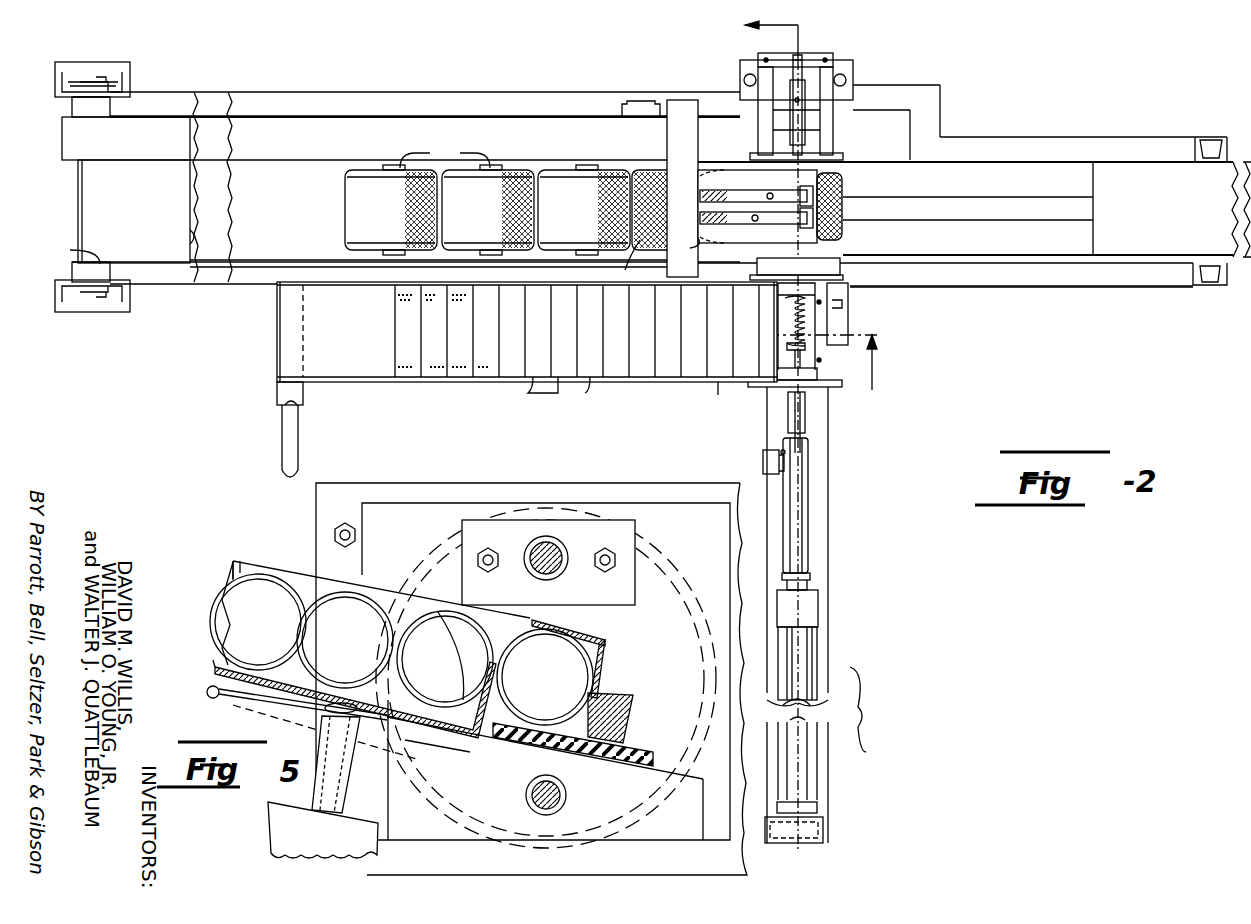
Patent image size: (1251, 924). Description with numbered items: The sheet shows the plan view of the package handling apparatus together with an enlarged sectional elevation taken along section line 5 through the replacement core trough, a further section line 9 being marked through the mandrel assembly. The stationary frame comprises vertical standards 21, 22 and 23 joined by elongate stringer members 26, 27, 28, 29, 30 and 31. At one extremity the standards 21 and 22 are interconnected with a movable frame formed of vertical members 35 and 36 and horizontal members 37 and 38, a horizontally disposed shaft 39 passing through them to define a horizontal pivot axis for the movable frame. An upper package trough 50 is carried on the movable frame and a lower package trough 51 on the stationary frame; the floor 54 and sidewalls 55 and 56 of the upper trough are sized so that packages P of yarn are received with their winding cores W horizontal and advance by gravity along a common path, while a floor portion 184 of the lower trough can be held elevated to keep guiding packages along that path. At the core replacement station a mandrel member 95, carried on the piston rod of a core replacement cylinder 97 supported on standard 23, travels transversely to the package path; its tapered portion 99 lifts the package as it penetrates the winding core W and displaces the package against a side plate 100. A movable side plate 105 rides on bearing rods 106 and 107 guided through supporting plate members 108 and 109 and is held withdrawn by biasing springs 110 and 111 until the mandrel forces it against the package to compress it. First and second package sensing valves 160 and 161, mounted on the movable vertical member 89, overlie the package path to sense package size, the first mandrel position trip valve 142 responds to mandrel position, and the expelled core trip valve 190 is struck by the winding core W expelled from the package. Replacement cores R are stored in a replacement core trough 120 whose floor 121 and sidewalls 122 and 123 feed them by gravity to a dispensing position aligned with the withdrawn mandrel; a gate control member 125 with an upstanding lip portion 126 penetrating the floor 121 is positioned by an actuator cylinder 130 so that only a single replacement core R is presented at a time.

In FIG. 2, the vertical standard 21 is at (110, 298).
In FIG. 2, the vertical standard 22 is at (110, 69).
In FIG. 2, the vertical standard 23 is at (820, 830).
In FIG. 2, the stringer member 26 is at (225, 295).
In FIG. 2, the stringer member 27 is at (225, 102).
In FIG. 2, the stringer member 28 is at (1205, 285).
In FIG. 2, the stringer member 29 is at (1210, 137).
In FIG. 2, the stringer member 30 is at (1040, 287).
In FIG. 2, the stringer member 31 is at (1025, 115).
In FIG. 2, the vertical member 35 is at (72, 272).
In FIG. 2, the vertical member 36 is at (72, 110).
In FIG. 2, the horizontal member 37 is at (205, 229).
In FIG. 2, the horizontal member 38 is at (211, 187).
In FIG. 2, the shaft 39 is at (82, 64).
In FIG. 2, the upper package trough 50 is at (85, 208).
In FIG. 2, the lower package trough 51 is at (1060, 162).
In FIG. 2, the floor 54 is at (115, 222).
In FIG. 2, the sidewall 55 is at (67, 247).
In FIG. 2, the sidewall 56 is at (100, 166).
In FIG. 2, the movable vertical member 89 is at (644, 237).
In FIG. 2, the mandrel member 95 is at (808, 508).
In FIG. 2, the core replacement cylinder 97 is at (798, 660).
In FIG. 2, the tapered portion 99 is at (805, 425).
In FIG. 2, the side plate 100 is at (745, 155).
In FIG. 2, the movable side plate 105 is at (830, 265).
In FIG. 5, the movable side plate 105 is at (655, 578).
In FIG. 5, the bearing rod 106 is at (560, 572).
In FIG. 5, the bearing rod 107 is at (566, 795).
In FIG. 2, the supporting plate member 108 is at (752, 388).
In FIG. 5, the supporting plate member 109 is at (400, 510).
In FIG. 5, the biasing spring 110 is at (525, 565).
In FIG. 5, the biasing spring 111 is at (525, 800).
In FIG. 2, the replacement core trough 120 is at (288, 352).
In FIG. 5, the replacement core trough 120 is at (256, 562).
In FIG. 2, the floor 121 is at (325, 339).
In FIG. 5, the floor 121 is at (215, 672).
In FIG. 2, the sidewall 122 is at (373, 375).
In FIG. 2, the sidewall 123 is at (376, 285).
In FIG. 5, the sidewall 123 is at (235, 564).
In FIG. 5, the gate control member 125 is at (280, 714).
In FIG. 5, the upstanding lip portion 126 is at (500, 700).
In FIG. 5, the actuator cylinder 130 is at (332, 843).
In FIG. 2, the first mandrel position trip valve 142 is at (755, 450).
In FIG. 2, the first package sensing valve 160 is at (700, 248).
In FIG. 2, the second package sensing valve 161 is at (685, 160).
In FIG. 2, the floor portion 184 is at (960, 190).
In FIG. 2, the expelled core trip valve 190 is at (803, 125).
In FIG. 2, the section line 5— 5 is at (794, 364).
In FIG. 2, the section line 9 is at (860, 595).
In FIG. 2, the package P is at (370, 168).
In FIG. 2, the winding core W is at (445, 152).
In FIG. 2, the replacement core R is at (559, 394).
In FIG. 5, the replacement core R is at (318, 590).